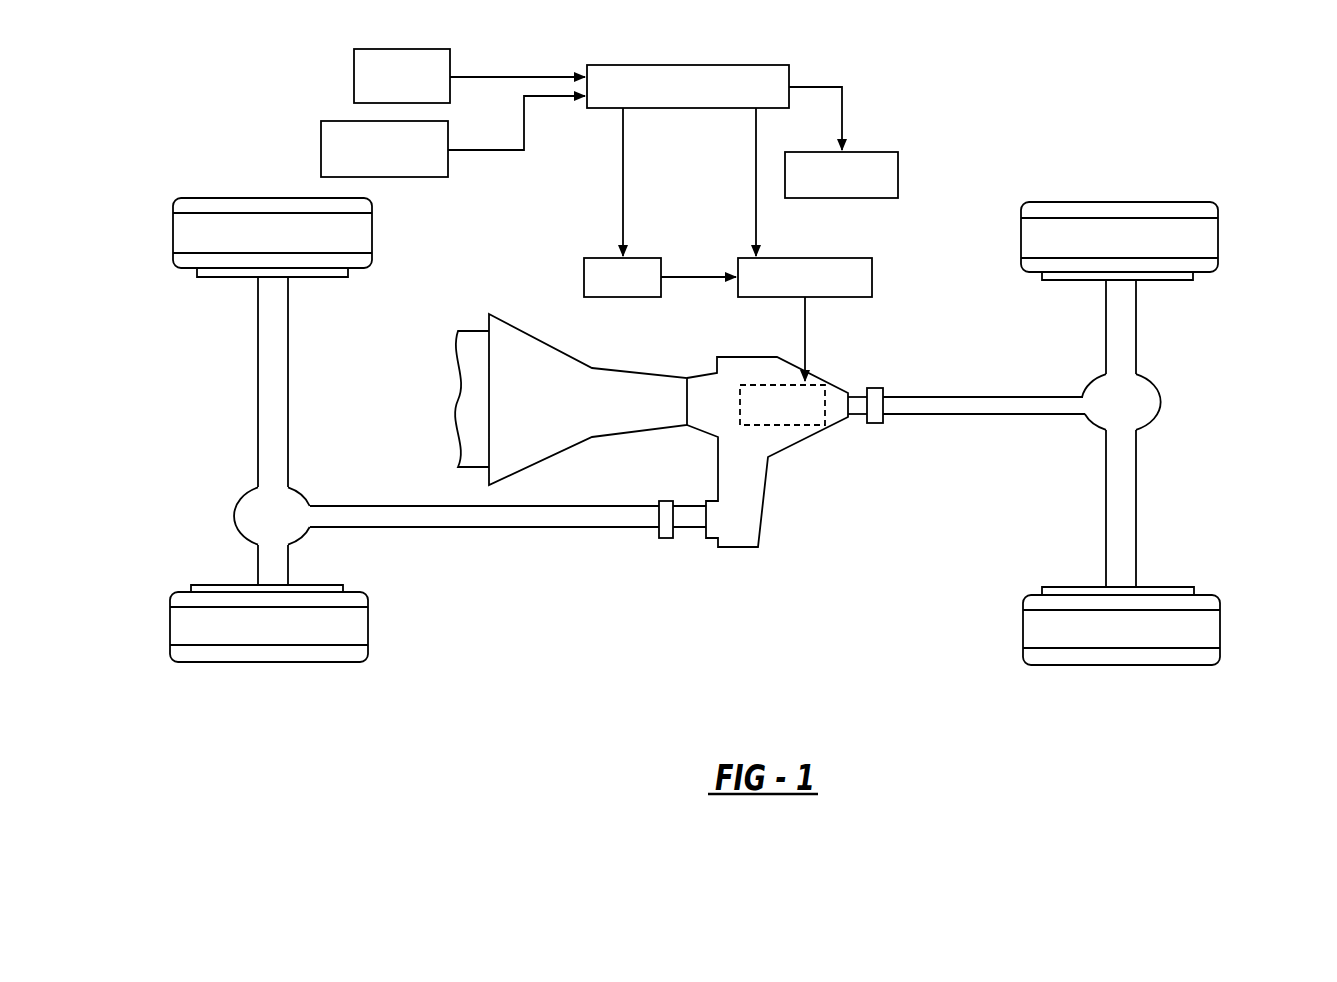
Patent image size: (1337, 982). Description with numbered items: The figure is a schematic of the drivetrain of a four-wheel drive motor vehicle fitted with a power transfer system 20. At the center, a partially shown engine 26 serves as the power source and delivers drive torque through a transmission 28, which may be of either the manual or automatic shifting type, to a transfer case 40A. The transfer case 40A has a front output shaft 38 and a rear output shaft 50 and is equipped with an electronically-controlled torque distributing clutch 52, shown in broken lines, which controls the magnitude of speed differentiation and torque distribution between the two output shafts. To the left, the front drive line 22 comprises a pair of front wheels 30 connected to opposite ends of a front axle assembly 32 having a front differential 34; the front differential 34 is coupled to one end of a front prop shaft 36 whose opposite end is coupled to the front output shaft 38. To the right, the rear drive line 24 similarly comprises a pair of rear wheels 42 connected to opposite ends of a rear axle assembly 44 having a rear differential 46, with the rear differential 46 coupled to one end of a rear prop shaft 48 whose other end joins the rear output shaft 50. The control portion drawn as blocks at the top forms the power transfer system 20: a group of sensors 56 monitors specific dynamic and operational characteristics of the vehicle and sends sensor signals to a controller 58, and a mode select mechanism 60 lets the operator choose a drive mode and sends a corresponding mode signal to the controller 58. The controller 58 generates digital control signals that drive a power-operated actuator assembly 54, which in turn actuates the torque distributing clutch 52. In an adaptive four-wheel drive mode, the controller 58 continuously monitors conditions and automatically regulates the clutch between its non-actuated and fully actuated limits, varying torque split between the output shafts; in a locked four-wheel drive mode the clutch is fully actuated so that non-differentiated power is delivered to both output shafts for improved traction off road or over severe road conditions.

The power transfer system 20 is at (1266, 386).
The front drive line 22 is at (329, 413).
The rear drive line 24 is at (1010, 374).
The engine 26 is at (481, 390).
The transmission 28 is at (603, 412).
The front wheels 30 is at (208, 228).
The front axle assembly 32 is at (266, 327).
The front differential 34 is at (252, 513).
The front prop shaft 36 is at (593, 516).
The front output shaft 38 is at (690, 519).
The transfer case 40A is at (798, 444).
The rear wheels 42 is at (1123, 230).
The rear axle assembly 44 is at (1116, 317).
The rear differential 46 is at (1143, 405).
The rear prop shaft 48 is at (1016, 407).
The rear output shaft 50 is at (856, 395).
The torque distributing clutch 52 is at (773, 385).
The actuator assembly 54 is at (872, 277).
The group of sensors 56 is at (354, 75).
The controller 58 is at (631, 65).
The mode select mechanism 60 is at (412, 177).